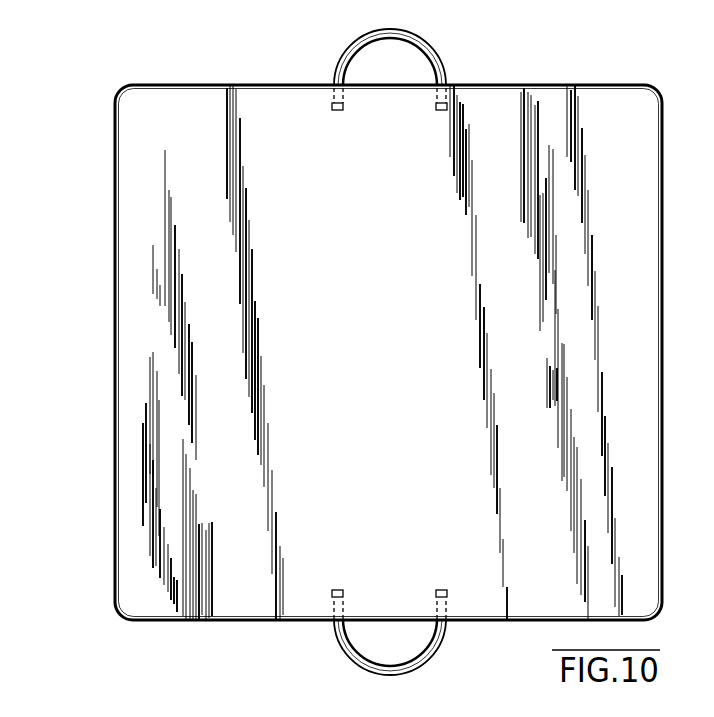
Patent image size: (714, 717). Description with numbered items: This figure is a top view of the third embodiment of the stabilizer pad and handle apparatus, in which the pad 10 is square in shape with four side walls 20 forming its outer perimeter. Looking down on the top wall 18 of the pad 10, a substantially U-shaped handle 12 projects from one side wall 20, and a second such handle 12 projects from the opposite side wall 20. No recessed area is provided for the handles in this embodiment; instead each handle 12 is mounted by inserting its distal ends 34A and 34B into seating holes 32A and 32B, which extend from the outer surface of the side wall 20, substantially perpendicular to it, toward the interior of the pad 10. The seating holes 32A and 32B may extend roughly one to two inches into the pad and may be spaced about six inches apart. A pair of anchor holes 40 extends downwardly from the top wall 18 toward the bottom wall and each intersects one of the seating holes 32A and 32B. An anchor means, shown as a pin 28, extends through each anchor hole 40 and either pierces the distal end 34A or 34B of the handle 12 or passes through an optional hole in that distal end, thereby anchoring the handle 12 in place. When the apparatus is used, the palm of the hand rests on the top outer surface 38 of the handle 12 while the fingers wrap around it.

The pad 10 is at (124, 52).
The handle 12 is at (348, 27).
The top wall 18 is at (188, 108).
The side wall 20 is at (242, 80).
The pin 28 is at (342, 95).
The anchor holes 40 is at (370, 353).
The seating hole 32A is at (333, 110).
The seating hole 32B is at (437, 102).
The distal end 34A is at (338, 113).
The distal end 34B is at (439, 112).
The top outer surface 38 is at (395, 32).